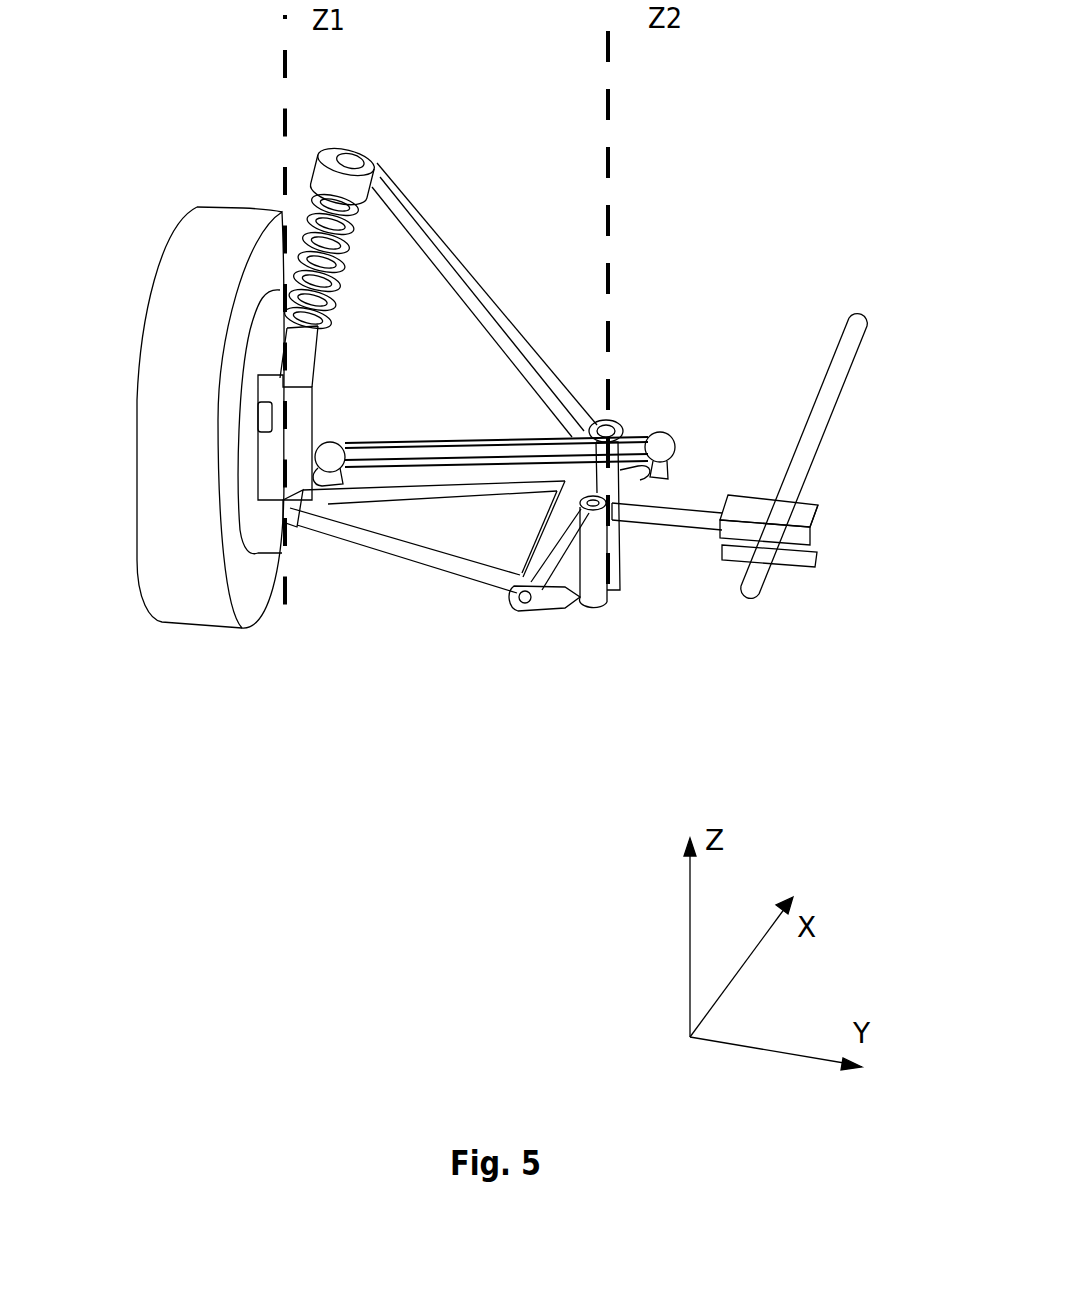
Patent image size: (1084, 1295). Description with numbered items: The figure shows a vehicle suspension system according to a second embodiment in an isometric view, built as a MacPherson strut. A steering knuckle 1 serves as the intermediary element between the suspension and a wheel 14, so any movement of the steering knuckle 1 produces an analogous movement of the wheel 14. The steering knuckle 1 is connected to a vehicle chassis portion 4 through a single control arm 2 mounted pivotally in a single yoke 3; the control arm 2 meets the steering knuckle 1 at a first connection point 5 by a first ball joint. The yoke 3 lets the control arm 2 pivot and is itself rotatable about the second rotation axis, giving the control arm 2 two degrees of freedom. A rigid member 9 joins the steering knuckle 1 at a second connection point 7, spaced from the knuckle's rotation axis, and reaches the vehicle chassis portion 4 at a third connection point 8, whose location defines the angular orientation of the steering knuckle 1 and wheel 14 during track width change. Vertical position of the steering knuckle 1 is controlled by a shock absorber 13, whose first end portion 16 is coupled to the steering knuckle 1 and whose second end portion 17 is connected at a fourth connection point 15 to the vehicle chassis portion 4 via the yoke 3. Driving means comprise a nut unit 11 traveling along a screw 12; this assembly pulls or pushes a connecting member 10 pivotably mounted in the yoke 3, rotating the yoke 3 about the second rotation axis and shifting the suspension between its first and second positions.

The steering knuckle 1 is at (268, 408).
The control arm 2 is at (473, 568).
The yoke 3 is at (566, 582).
The vehicle chassis portion 4 is at (606, 427).
The first connection point 5 is at (278, 513).
The second connection point 7 is at (323, 458).
The third connection point 8 is at (663, 447).
The rigid member 9 is at (400, 455).
The connecting member 10 is at (655, 517).
The nut unit 11 is at (787, 557).
The screw 12 is at (858, 348).
The shock absorber 13 is at (300, 257).
The wheel 14 is at (217, 218).
The fourth connection point 15 is at (350, 170).
The first end portion 16 is at (296, 362).
The second end portion 17 is at (378, 175).